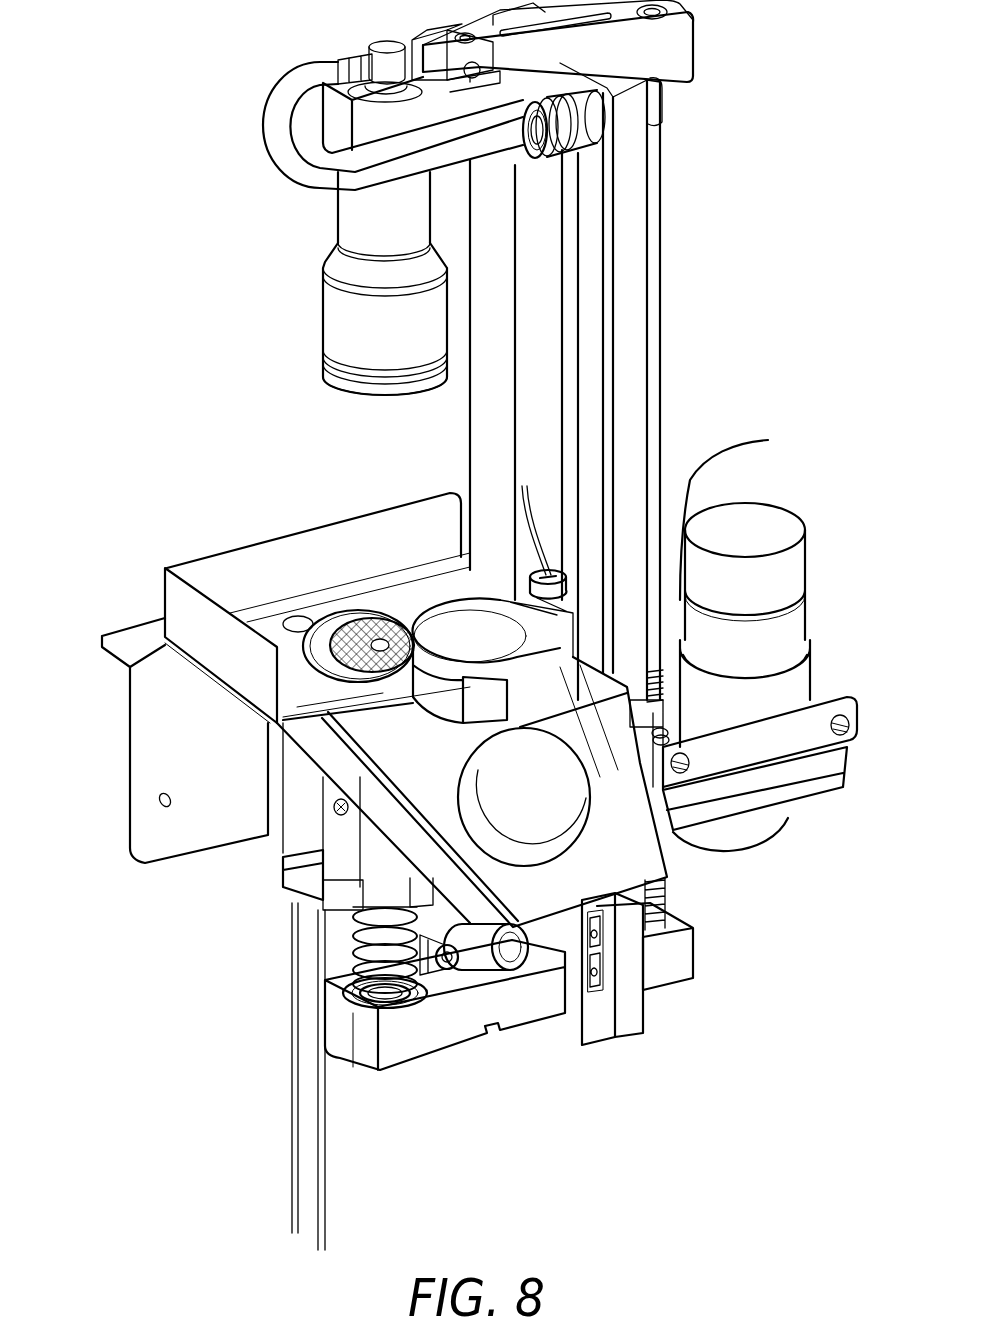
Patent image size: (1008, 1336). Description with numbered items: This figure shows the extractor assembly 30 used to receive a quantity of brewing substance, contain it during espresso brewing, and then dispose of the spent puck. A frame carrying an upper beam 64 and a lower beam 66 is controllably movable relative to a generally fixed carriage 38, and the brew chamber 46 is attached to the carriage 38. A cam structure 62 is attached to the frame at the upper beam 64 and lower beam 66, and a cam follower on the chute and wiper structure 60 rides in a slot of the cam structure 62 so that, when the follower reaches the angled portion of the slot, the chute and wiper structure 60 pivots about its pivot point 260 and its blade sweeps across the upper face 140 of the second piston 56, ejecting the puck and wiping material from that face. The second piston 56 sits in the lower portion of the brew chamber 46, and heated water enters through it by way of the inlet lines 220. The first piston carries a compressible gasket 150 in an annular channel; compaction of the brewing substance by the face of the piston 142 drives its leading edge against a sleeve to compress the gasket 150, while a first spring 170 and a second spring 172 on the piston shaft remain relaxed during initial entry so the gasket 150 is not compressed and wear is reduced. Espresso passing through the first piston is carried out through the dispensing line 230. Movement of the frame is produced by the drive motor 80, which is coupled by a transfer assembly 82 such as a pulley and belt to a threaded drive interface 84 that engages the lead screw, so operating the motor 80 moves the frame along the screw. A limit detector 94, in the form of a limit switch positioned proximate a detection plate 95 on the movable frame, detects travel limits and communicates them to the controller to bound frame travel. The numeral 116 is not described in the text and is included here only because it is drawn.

The extractor assembly 30 is at (118, 180).
The dispensing line 230 is at (268, 122).
The first spring 170 is at (286, 252).
The gasket 150 is at (325, 346).
The face of the piston 142 is at (385, 395).
The second spring 172 is at (566, 428).
The upper face of the second piston 140 is at (332, 632).
The second piston 56 is at (357, 606).
The chute and wiper structure 60 is at (420, 596).
The pivot point 260 is at (522, 486).
The manifold housing 116 is at (277, 642).
The drive interface 84 is at (741, 515).
The drive motor 80 is at (770, 632).
The limit detector 94 is at (637, 707).
The carriage 38 is at (810, 778).
The transfer assembly 82 is at (750, 840).
The lower beam 66 is at (687, 951).
The detection plate 95 is at (622, 955).
The cam structure 62 is at (632, 203).
The upper beam 64 is at (682, 64).
The inlet lines 220 is at (426, 985).
The brew chamber 46 is at (270, 885).